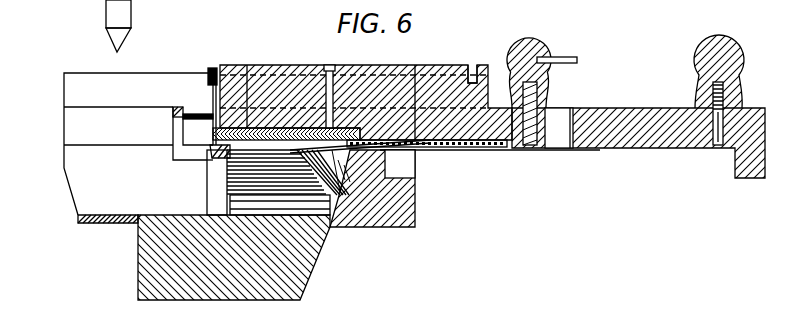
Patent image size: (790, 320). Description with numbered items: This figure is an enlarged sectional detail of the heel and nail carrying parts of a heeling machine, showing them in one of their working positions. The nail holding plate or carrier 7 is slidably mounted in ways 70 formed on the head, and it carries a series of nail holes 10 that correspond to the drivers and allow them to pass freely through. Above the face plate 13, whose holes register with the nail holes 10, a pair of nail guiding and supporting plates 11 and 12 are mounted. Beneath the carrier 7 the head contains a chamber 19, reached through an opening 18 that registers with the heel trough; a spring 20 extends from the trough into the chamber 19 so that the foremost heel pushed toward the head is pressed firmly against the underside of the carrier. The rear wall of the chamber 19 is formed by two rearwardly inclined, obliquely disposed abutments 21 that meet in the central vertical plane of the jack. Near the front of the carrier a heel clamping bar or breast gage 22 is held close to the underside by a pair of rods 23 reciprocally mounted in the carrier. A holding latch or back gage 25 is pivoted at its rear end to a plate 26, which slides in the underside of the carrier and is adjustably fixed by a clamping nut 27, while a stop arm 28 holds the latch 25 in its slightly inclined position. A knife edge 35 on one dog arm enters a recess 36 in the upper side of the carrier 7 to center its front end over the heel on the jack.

The nail holding plate or carrier 7 is at (347, 63).
The nail holes 10 is at (284, 63).
The nail guiding and supporting plate 11 is at (247, 63).
The nail guiding and supporting plate 12 is at (225, 63).
The face plate 13 is at (217, 182).
The opening 18 is at (207, 165).
The chamber 19 is at (182, 208).
The spring 20 is at (208, 197).
The obliquely disposed abutments 21 is at (395, 195).
The heel clamping bar or breast gage 22 is at (207, 161).
The rods 23 is at (180, 115).
The holding latch or back gage 25 is at (390, 165).
The plate 26 is at (503, 147).
The clamping nut 27 is at (547, 53).
The stop arm 28 is at (445, 148).
The knife edge 35 is at (125, 39).
The recess 36 is at (472, 65).
The ways 70 is at (97, 143).